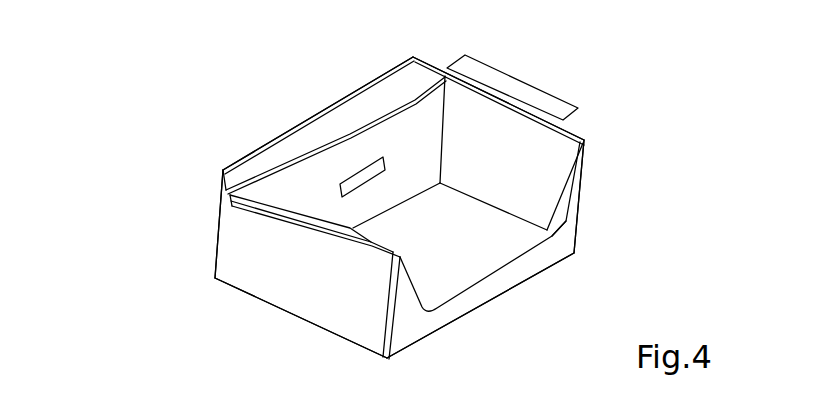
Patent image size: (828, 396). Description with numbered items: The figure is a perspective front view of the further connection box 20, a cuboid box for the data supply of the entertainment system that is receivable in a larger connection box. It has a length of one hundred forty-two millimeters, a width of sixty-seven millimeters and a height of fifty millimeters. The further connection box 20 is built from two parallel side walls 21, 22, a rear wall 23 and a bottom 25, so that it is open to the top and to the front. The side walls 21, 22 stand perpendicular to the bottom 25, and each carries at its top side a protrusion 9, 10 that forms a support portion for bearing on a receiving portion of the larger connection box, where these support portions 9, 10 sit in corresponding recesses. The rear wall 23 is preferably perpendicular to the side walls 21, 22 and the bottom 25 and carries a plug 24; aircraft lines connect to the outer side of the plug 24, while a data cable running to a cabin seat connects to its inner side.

The further connection box 20 is at (170, 218).
The side wall 21 is at (345, 302).
The side wall 22 is at (550, 185).
The rear wall 23 is at (322, 182).
The plug 24 is at (377, 132).
The bottom 25 is at (445, 268).
The protrusion 9 is at (318, 229).
The protrusion 10 is at (506, 102).